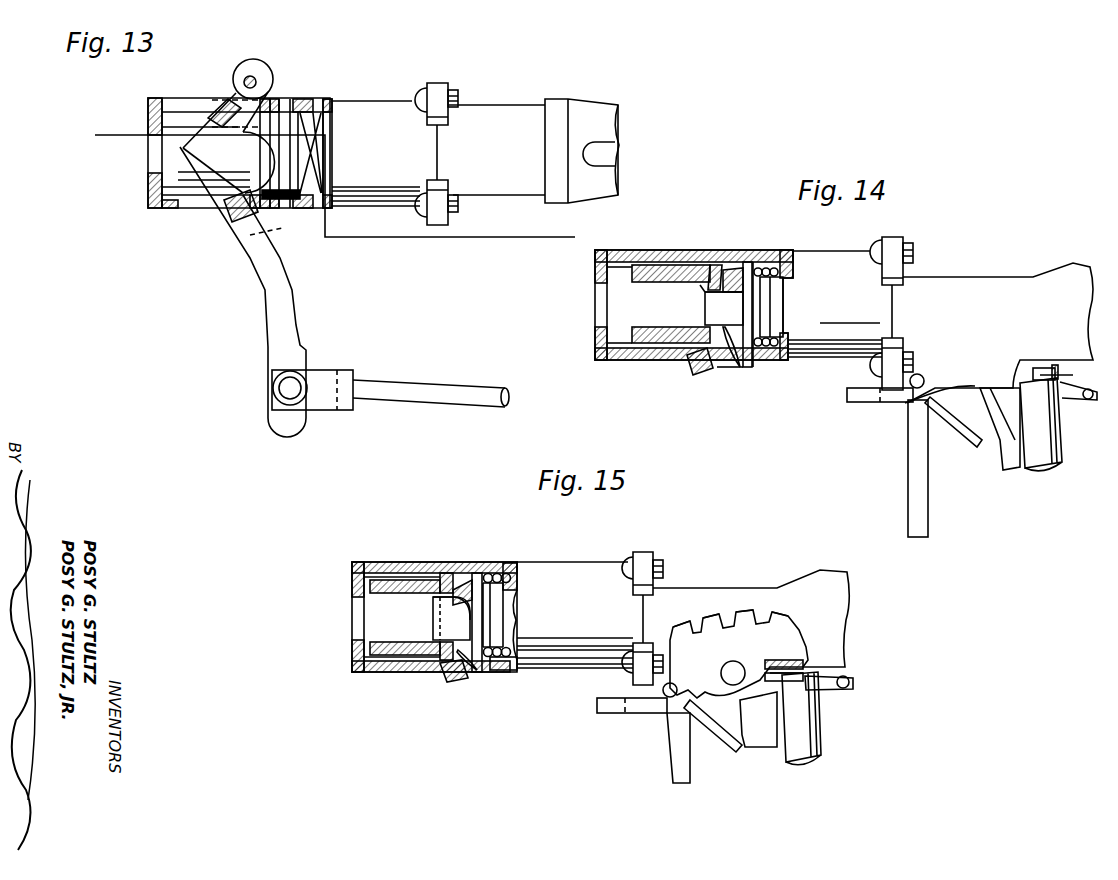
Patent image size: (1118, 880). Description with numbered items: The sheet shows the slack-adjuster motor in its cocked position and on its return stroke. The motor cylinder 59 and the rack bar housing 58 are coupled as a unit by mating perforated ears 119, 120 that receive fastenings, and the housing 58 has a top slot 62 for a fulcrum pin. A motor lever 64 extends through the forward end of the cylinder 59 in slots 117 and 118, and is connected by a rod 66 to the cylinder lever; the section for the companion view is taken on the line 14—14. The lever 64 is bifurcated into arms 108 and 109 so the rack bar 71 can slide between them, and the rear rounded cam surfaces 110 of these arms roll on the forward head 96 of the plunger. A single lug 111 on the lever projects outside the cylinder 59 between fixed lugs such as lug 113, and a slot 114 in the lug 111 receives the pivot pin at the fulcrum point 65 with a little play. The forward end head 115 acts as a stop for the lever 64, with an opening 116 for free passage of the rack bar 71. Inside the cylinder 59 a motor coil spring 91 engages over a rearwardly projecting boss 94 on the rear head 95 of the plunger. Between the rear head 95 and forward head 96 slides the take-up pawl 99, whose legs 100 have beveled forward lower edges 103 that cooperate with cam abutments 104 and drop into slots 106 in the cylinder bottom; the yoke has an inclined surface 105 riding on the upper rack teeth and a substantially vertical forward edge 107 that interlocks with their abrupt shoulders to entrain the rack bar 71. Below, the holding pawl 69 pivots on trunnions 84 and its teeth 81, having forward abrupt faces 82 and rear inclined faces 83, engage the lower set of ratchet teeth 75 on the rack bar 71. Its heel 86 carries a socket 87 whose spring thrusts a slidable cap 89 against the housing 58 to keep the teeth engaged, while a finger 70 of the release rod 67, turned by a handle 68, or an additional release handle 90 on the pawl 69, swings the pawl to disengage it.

In FIG. 13, the section line 14 is at (124, 151).
In FIG. 13, the rack bar housing 58 is at (500, 167).
In FIG. 14, the rack bar housing 58 is at (1022, 285).
In FIG. 15, the rack bar housing 58 is at (751, 618).
In FIG. 13, the motor cylinder 59 is at (342, 105).
In FIG. 14, the motor cylinder 59 is at (842, 263).
In FIG. 15, the motor cylinder 59 is at (547, 570).
In FIG. 13, the top slot 62 is at (612, 150).
In FIG. 13, the motor lever 64 is at (278, 303).
In FIG. 13, the fulcrum point 65 is at (251, 81).
In FIG. 13, the rod 66 is at (448, 397).
In FIG. 14, the release rod 67 is at (912, 386).
In FIG. 15, the release rod 67 is at (668, 693).
In FIG. 14, the handle 68 is at (915, 460).
In FIG. 15, the handle 68 is at (675, 755).
In FIG. 15, the holding pawl 69 is at (720, 666).
In FIG. 14, the finger 70 is at (978, 443).
In FIG. 15, the finger 70 is at (727, 743).
In FIG. 14, the rack bar 71 is at (710, 305).
In FIG. 15, the rack bar 71 is at (433, 615).
In FIG. 15, the lower set of ratchet teeth 75 is at (777, 630).
In FIG. 15, the teeth of the holding pawl 81 is at (690, 628).
In FIG. 15, the forward abrupt faces 82 is at (730, 627).
In FIG. 15, the rear inclined faces 83 is at (712, 630).
In FIG. 15, the trunnions 84 is at (737, 673).
In FIG. 14, the heel 86 is at (1002, 430).
In FIG. 15, the heel 86 is at (752, 730).
In FIG. 14, the socket 87 is at (1057, 445).
In FIG. 15, the socket 87 is at (813, 735).
In FIG. 14, the slidable cap 89 is at (1062, 377).
In FIG. 15, the slidable cap 89 is at (787, 682).
In FIG. 14, the release handle 90 is at (1090, 402).
In FIG. 15, the release handle 90 is at (853, 678).
In FIG. 13, the motor coil spring 91 is at (318, 128).
In FIG. 14, the motor coil spring 91 is at (780, 272).
In FIG. 15, the motor coil spring 91 is at (517, 583).
In FIG. 14, the rearwardly projecting boss 94 is at (763, 303).
In FIG. 15, the rearwardly projecting boss 94 is at (493, 615).
In FIG. 13, the rear head 95 is at (296, 117).
In FIG. 14, the rear head 95 is at (754, 266).
In FIG. 15, the rear head 95 is at (483, 573).
In FIG. 13, the forward head 96 is at (245, 138).
In FIG. 14, the forward head 96 is at (715, 263).
In FIG. 15, the forward head 96 is at (447, 573).
In FIG. 13, the take-up pawl 99 is at (275, 185).
In FIG. 14, the take-up pawl 99 is at (732, 270).
In FIG. 15, the take-up pawl 99 is at (460, 580).
In FIG. 14, the legs 100 is at (748, 358).
In FIG. 15, the legs 100 is at (487, 653).
In FIG. 14, the beveled forward lower edges 103 is at (723, 367).
In FIG. 15, the beveled forward lower edges 103 is at (460, 670).
In FIG. 14, the cam abutments 104 is at (698, 360).
In FIG. 15, the cam abutments 104 is at (455, 663).
In FIG. 14, the inclined surface 105 is at (724, 307).
In FIG. 15, the inclined surface 105 is at (433, 628).
In FIG. 14, the slots 106 is at (725, 372).
In FIG. 15, the slots 106 is at (507, 663).
In FIG. 14, the forward edge of the yoke 107 is at (703, 289).
In FIG. 15, the forward edge of the yoke 107 is at (433, 602).
In FIG. 13, the arm 108 is at (227, 174).
In FIG. 14, the arm 108 is at (638, 268).
In FIG. 15, the arm 108 is at (382, 580).
In FIG. 14, the arm 109 is at (642, 340).
In FIG. 15, the arm 109 is at (387, 650).
In FIG. 13, the cam surfaces 110 is at (252, 162).
In FIG. 13, the lug 111 is at (225, 87).
In FIG. 13, the fixed lug 113 is at (273, 102).
In FIG. 13, the slot 114 is at (259, 108).
In FIG. 13, the forward end head 115 is at (150, 193).
In FIG. 14, the forward end head 115 is at (607, 340).
In FIG. 15, the forward end head 115 is at (352, 652).
In FIG. 13, the opening 116 is at (148, 152).
In FIG. 14, the opening 116 is at (607, 298).
In FIG. 15, the opening 116 is at (352, 617).
In FIG. 13, the slot 117 is at (178, 207).
In FIG. 14, the slot 117 is at (691, 354).
In FIG. 15, the slot 117 is at (431, 666).
In FIG. 13, the slot 118 is at (185, 100).
In FIG. 14, the slot 118 is at (694, 256).
In FIG. 15, the slot 118 is at (434, 567).
In FIG. 13, the ear 119 is at (432, 83).
In FIG. 14, the ear 119 is at (886, 313).
In FIG. 15, the ear 119 is at (637, 550).
In FIG. 13, the ear 120 is at (445, 88).
In FIG. 14, the ear 120 is at (908, 307).
In FIG. 15, the ear 120 is at (652, 553).